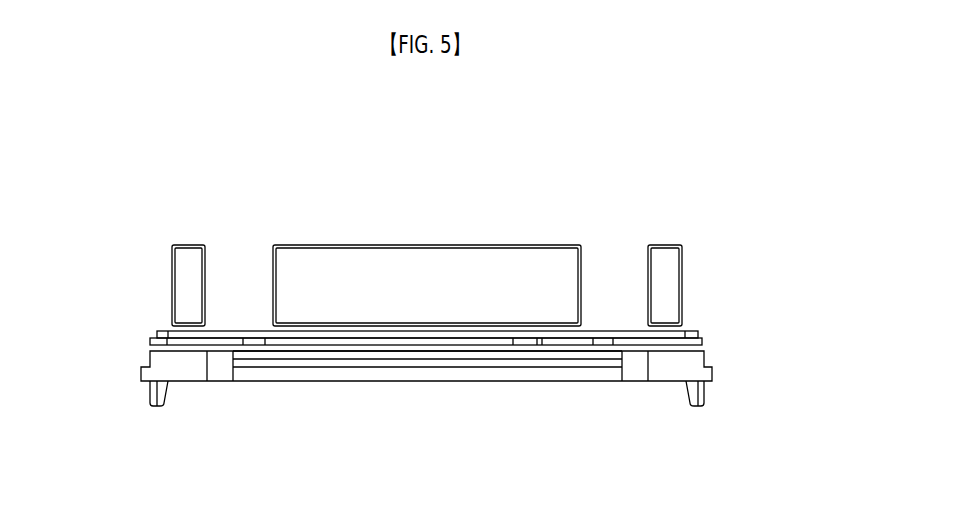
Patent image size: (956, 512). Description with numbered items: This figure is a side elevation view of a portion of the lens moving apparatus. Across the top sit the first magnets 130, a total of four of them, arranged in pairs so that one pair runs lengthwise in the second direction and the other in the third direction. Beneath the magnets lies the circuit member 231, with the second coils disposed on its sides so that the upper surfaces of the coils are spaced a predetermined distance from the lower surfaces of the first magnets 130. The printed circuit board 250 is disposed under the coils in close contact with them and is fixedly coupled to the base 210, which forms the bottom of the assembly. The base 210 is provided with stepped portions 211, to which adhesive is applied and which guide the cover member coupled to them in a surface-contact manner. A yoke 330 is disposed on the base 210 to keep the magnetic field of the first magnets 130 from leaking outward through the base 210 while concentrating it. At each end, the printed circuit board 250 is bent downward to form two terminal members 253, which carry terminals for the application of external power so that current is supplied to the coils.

The first magnets 130 is at (285, 277).
The circuit member 231 is at (695, 335).
The printed circuit board 250 is at (152, 342).
The base 210 is at (195, 370).
The stepped portions 211 is at (328, 363).
The yoke 330 is at (460, 351).
The terminal members 253 is at (703, 392).